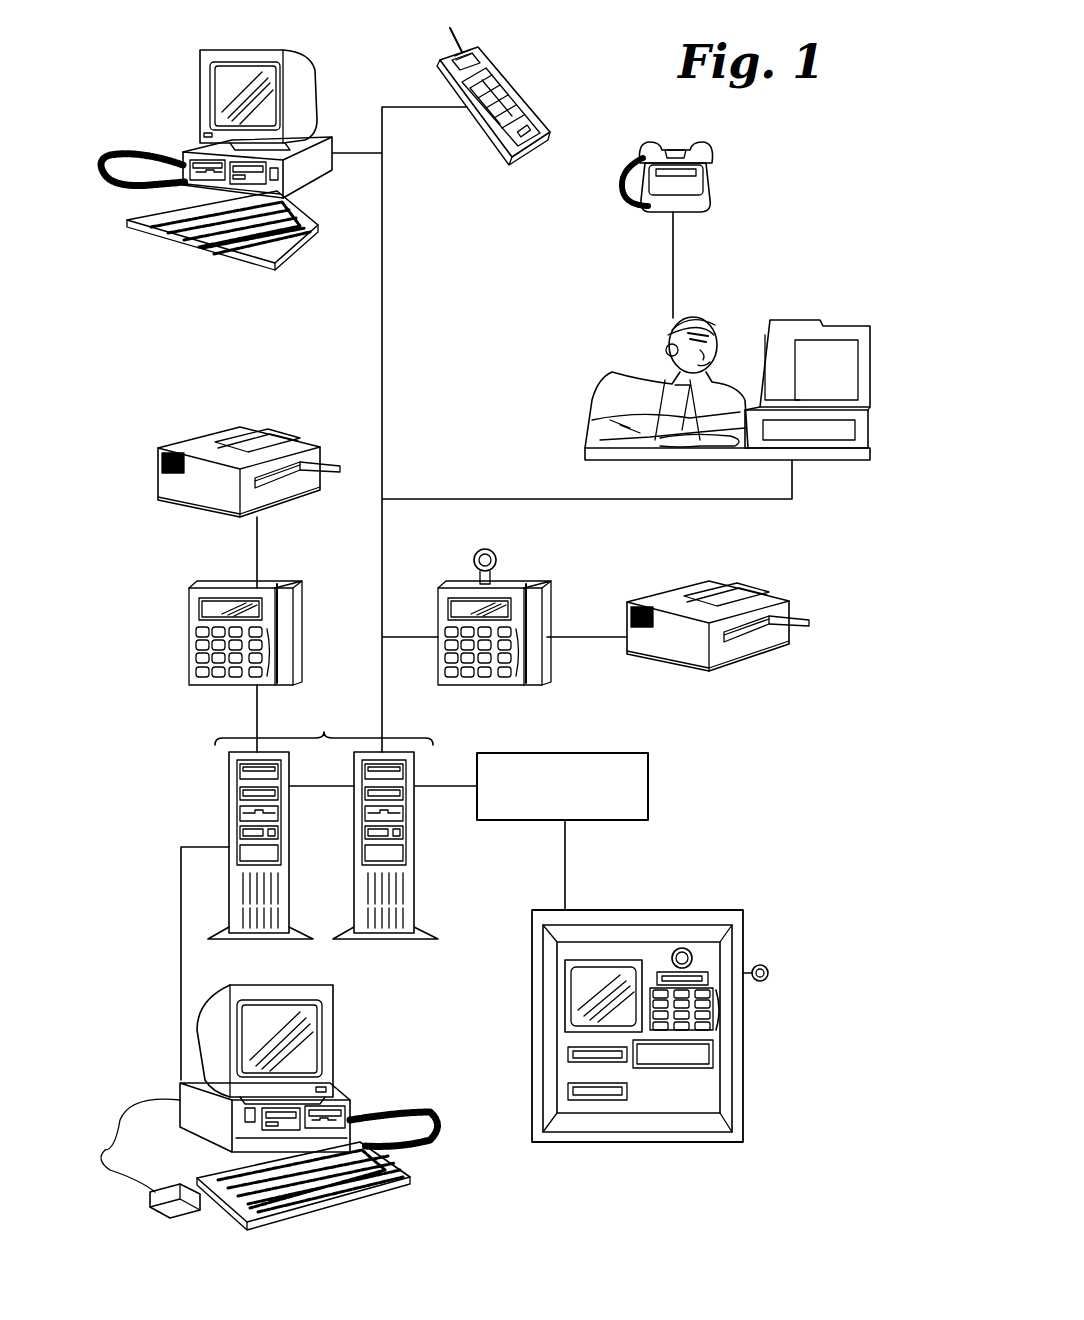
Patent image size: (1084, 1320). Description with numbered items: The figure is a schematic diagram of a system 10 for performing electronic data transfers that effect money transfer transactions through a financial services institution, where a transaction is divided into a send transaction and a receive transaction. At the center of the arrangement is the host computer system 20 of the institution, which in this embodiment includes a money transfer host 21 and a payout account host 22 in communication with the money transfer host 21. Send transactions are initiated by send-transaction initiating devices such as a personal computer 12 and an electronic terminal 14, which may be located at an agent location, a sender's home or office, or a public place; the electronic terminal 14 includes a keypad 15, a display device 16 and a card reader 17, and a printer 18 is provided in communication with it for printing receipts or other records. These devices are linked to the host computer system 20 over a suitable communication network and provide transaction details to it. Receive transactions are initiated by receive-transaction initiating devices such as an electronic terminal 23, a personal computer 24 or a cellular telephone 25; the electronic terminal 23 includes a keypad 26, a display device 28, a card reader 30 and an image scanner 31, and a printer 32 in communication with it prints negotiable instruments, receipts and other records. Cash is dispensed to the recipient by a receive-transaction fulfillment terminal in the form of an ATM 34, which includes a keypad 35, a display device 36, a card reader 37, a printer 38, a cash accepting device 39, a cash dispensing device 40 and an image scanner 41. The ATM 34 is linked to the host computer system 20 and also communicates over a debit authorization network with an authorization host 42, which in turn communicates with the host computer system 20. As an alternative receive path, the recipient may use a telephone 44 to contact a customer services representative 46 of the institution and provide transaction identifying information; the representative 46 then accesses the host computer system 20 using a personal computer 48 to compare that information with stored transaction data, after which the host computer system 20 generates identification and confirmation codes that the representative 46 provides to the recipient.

The system 10 is at (812, 140).
The personal computer 12 is at (343, 1024).
The electronic terminal 14 is at (205, 582).
The keypad 15 is at (282, 650).
The display device 16 is at (199, 610).
The card reader 17 is at (280, 600).
The printer 18 is at (205, 440).
The host computer system 20 is at (324, 724).
The money transfer host 21 is at (229, 806).
The payout account host 22 is at (415, 847).
The electronic terminal 23 is at (540, 585).
The personal computer 24 is at (324, 50).
The cellular telephone 25 is at (508, 78).
The keypad 26 is at (528, 650).
The display device 28 is at (447, 608).
The card reader 30 is at (530, 600).
The image scanner 31 is at (492, 552).
The printer 32 is at (682, 668).
The ATM 34 is at (720, 1000).
The keypad 35 is at (720, 1012).
The display device 36 is at (565, 1008).
The card reader 37 is at (710, 972).
The printer 38 is at (568, 1054).
The cash accepting device 39 is at (568, 1090).
The cash dispensing device 40 is at (713, 1055).
The image scanner 41 is at (770, 973).
The authorization host 42 is at (648, 786).
The telephone 44 is at (712, 180).
The customer services representative 46 is at (622, 372).
The personal computer 48 is at (785, 320).